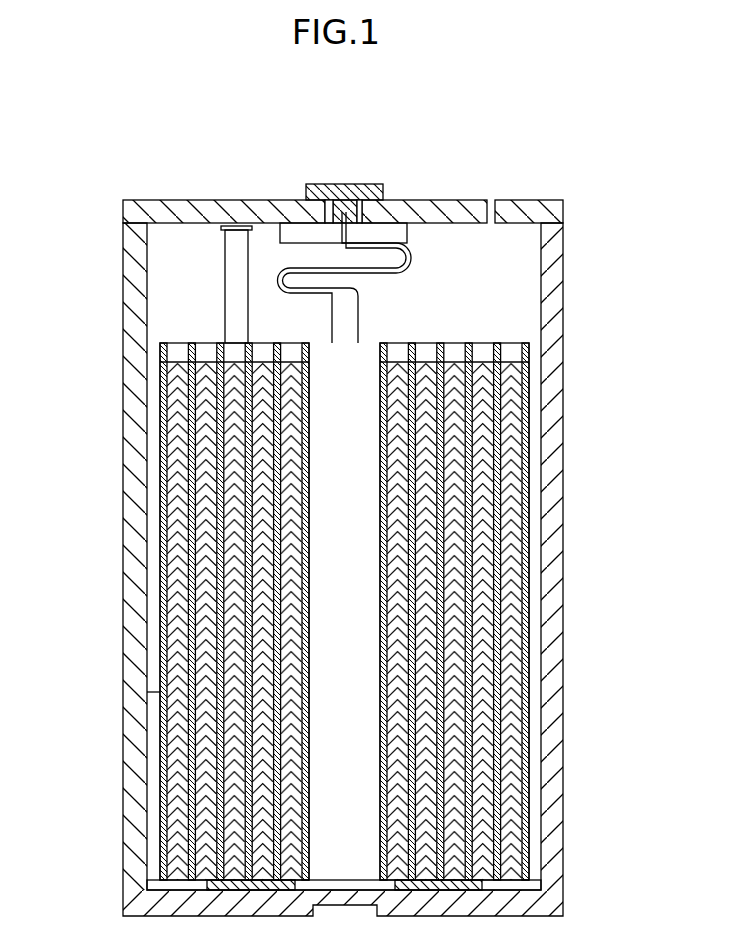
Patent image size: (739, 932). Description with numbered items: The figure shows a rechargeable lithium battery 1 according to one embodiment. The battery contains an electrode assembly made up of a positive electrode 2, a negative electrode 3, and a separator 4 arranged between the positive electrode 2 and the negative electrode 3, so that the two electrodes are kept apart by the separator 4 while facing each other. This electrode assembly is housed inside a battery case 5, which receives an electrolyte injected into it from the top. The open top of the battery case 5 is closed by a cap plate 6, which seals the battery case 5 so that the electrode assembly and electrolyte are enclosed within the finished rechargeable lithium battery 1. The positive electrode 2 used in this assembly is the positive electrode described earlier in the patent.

The rechargeable lithium battery 1 is at (479, 165).
The positive electrode 2 is at (346, 611).
The negative electrode 3 is at (205, 738).
The separator 4 is at (167, 815).
The battery case 5 is at (137, 283).
The cap plate 6 is at (307, 188).